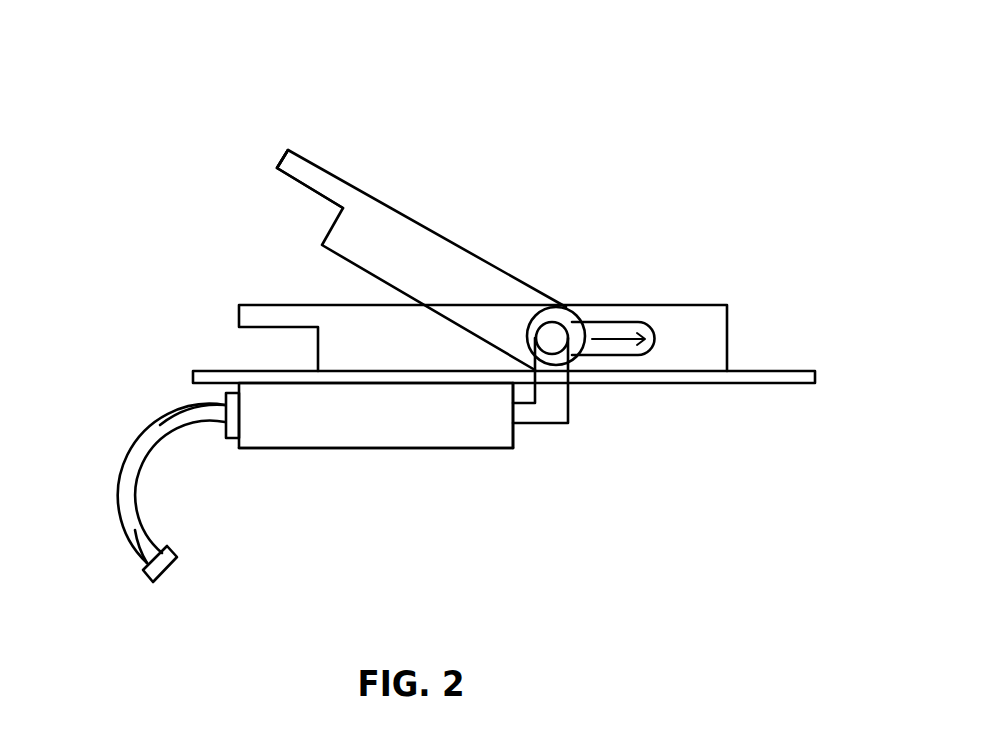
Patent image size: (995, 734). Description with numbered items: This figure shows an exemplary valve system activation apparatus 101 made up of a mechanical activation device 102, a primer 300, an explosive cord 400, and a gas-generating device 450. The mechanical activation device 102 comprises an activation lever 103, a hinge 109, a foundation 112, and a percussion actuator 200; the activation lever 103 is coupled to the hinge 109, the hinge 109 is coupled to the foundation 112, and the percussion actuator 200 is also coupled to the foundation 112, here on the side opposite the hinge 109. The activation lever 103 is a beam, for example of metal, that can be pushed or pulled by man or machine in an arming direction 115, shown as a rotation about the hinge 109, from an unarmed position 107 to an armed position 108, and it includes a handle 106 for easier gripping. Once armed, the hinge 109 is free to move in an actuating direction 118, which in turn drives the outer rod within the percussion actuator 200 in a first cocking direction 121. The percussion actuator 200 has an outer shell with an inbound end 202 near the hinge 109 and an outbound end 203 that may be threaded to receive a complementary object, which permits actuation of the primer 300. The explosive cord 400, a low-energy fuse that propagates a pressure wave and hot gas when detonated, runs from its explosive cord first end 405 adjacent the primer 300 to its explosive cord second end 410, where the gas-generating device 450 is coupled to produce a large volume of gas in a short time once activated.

The valve system activation apparatus 101 is at (740, 160).
The mechanical activation device 102 is at (98, 138).
The activation lever 103 is at (433, 252).
The handle 106 is at (318, 180).
The unarmed position 107 is at (257, 352).
The armed position 108 is at (302, 134).
The hinge 109 is at (552, 335).
The foundation 112 is at (792, 377).
The arming direction 115 is at (288, 209).
The actuating direction 118 is at (627, 335).
The first cocking direction 121 is at (597, 402).
The percussion actuator 200 is at (428, 438).
The inbound end 202 is at (515, 448).
The outbound end 203 is at (269, 450).
The primer 300 is at (232, 430).
The explosive cord 400 is at (130, 478).
The explosive cord first end 405 is at (193, 417).
The explosive cord second end 410 is at (145, 543).
The gas-generating device 450 is at (147, 570).